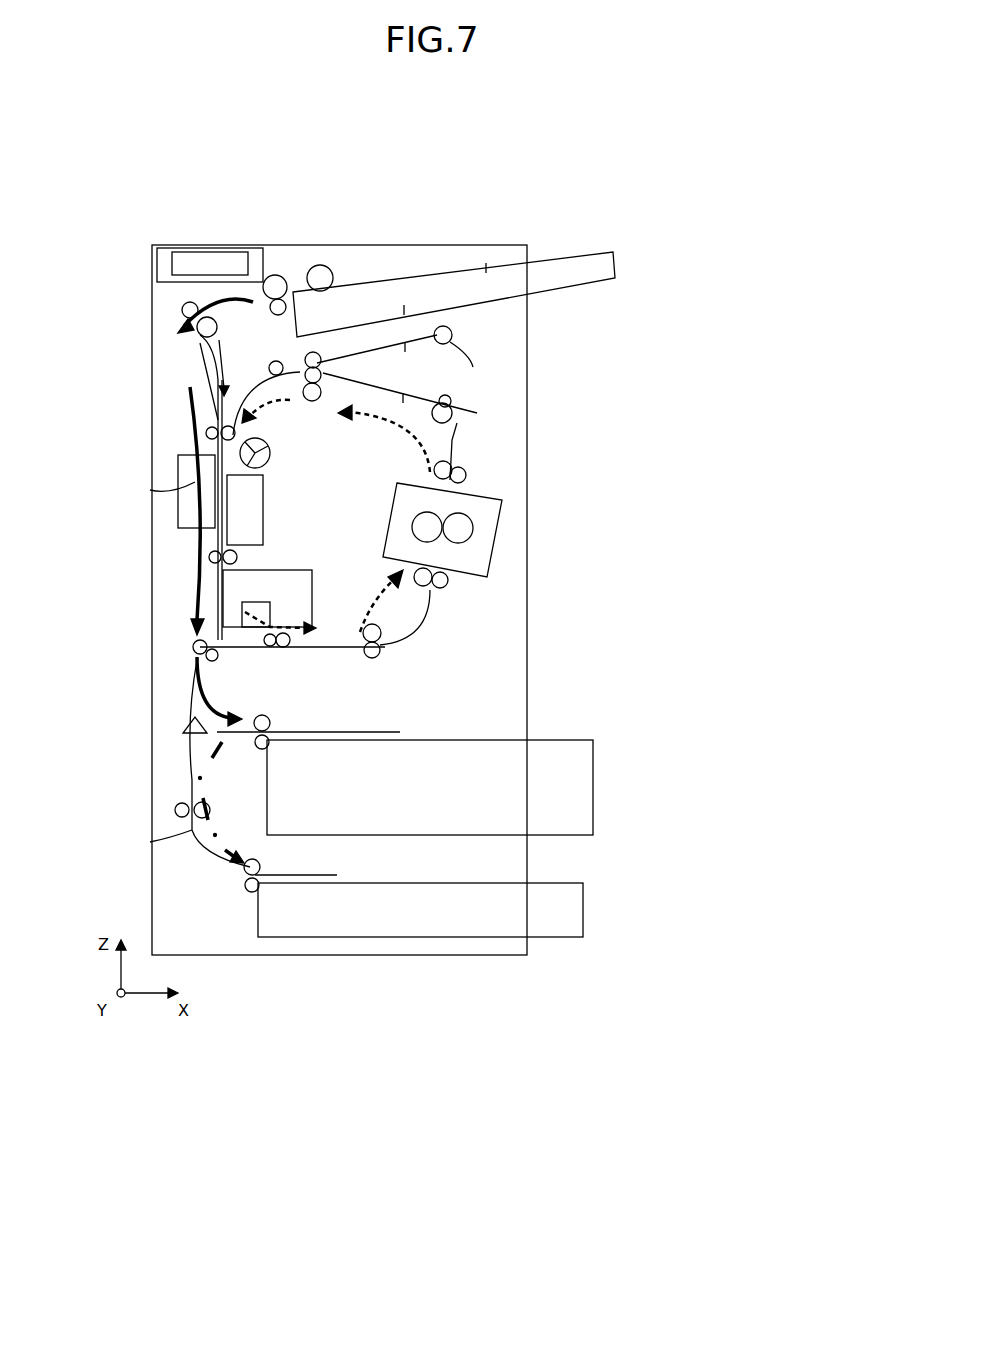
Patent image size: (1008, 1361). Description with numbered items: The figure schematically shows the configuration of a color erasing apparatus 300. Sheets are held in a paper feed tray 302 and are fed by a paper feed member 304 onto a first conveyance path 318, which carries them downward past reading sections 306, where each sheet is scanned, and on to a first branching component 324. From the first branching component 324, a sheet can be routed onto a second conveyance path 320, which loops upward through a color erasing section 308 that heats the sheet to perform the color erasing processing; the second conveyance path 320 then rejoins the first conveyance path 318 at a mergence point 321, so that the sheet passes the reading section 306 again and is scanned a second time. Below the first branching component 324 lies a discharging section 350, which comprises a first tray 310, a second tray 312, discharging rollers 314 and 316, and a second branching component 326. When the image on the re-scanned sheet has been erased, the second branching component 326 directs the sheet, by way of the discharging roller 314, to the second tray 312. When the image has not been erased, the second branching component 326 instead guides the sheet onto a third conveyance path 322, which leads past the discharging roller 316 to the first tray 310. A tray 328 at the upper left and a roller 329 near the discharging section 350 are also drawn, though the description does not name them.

The color erasing apparatus 300 is at (648, 172).
The paper feed tray 302 is at (556, 247).
The paper feed member 304 is at (310, 258).
The reading section 306 is at (205, 510).
The color erasing section 308 is at (485, 528).
The first tray 310 is at (593, 780).
The second tray 312 is at (583, 905).
The discharging roller 314 is at (280, 715).
The discharging roller 316 is at (245, 893).
The first conveyance path 318 is at (193, 372).
The second conveyance path 320 is at (455, 443).
The mergence point 321 is at (212, 340).
The third conveyance path 322 is at (516, 1157).
The first branching component 324 is at (228, 645).
The second branching component 326 is at (190, 742).
The discharge tray 328 is at (190, 250).
The conveyance roller 329 is at (242, 718).
The discharging section 350 is at (580, 668).